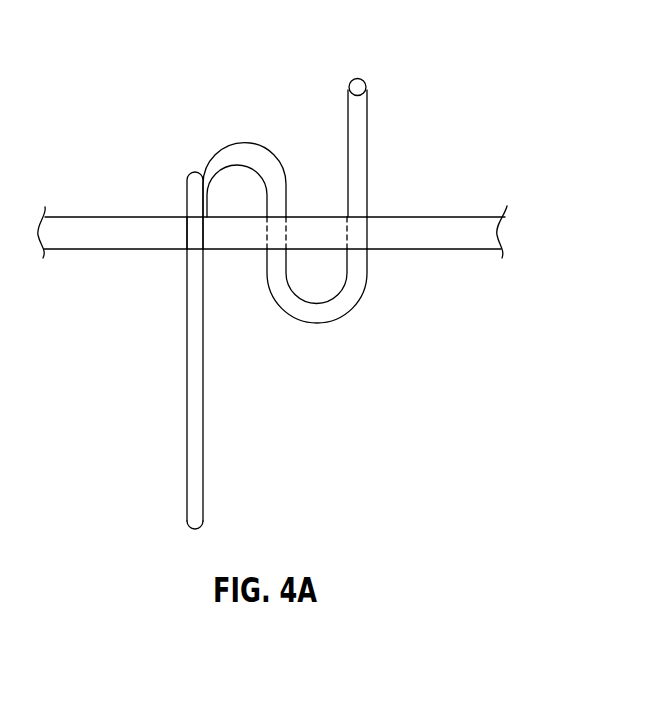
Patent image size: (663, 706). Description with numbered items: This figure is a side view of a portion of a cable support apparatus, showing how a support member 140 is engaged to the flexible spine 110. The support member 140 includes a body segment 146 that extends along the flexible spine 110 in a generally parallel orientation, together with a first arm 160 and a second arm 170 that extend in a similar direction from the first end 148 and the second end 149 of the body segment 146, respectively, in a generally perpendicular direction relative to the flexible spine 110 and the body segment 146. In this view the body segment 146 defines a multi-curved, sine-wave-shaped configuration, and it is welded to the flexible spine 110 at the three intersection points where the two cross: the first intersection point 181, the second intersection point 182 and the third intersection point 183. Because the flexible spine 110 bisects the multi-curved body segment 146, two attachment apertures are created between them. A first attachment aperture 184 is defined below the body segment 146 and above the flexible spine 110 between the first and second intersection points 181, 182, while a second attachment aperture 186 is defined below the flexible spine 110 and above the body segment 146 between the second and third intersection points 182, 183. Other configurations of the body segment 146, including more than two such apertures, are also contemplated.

The flexible spine 110 is at (445, 217).
The support member 140 is at (480, 73).
The body segment 146 is at (362, 28).
The first end 148 is at (190, 515).
The second end 149 is at (368, 100).
The first arm 160 is at (190, 337).
The second arm 170 is at (352, 83).
The first intersection point 181 is at (190, 228).
The second intersection point 182 is at (281, 235).
The third intersection point 183 is at (363, 230).
The first attachment aperture 184 is at (240, 188).
The second attachment aperture 186 is at (320, 280).